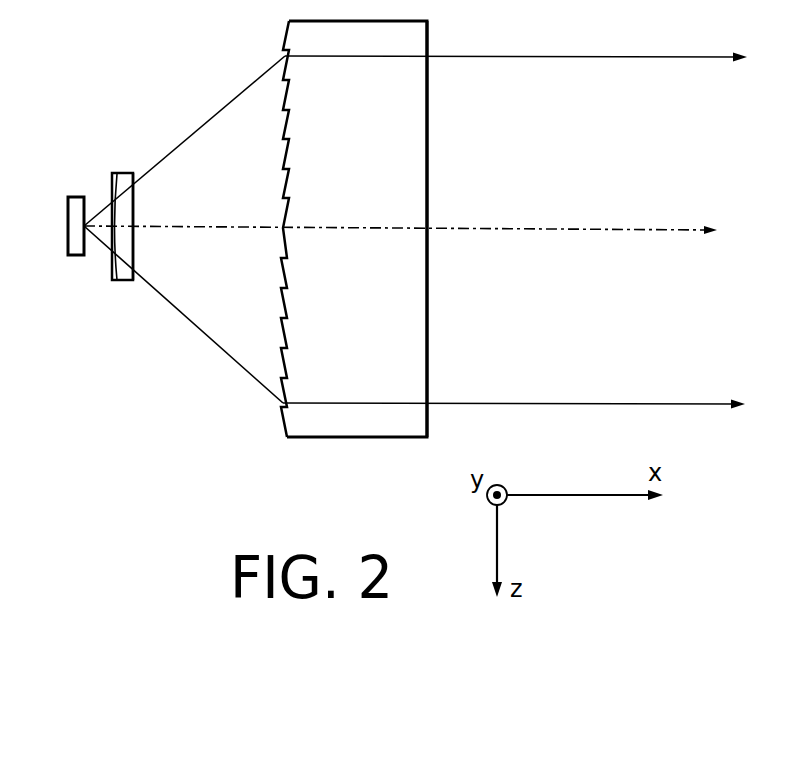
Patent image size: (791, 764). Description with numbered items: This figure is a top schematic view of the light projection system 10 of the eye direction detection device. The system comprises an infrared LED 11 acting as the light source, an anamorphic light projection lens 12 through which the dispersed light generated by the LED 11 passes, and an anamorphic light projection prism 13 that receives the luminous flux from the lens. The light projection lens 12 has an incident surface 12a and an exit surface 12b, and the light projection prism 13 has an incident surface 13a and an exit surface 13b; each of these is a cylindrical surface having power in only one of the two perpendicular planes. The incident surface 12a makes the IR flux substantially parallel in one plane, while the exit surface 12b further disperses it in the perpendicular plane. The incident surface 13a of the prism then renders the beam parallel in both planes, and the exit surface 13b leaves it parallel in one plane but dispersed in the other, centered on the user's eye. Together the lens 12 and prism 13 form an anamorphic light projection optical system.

The light projection system 10 is at (203, 380).
The infrared LED 11 is at (68, 209).
The anamorphic light projection lens 12 is at (135, 218).
The incident surface 12a is at (113, 262).
The exit surface 12b is at (133, 240).
The anamorphic light projection prism 13 is at (350, 262).
The incident surface 13a is at (283, 150).
The exit surface 13b is at (427, 335).